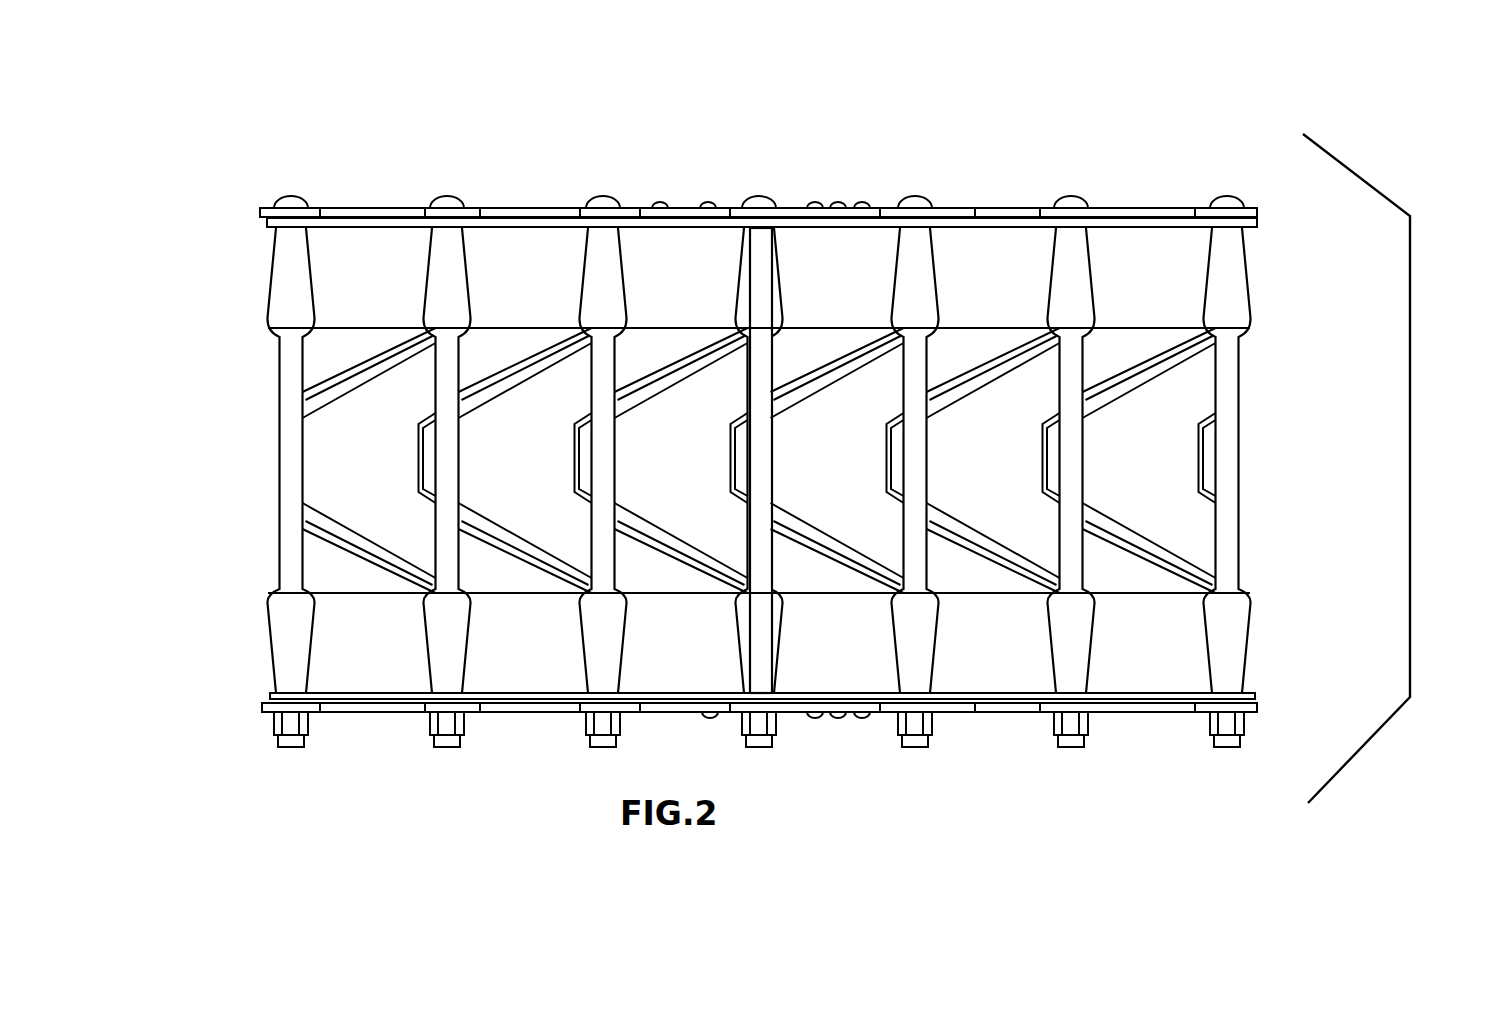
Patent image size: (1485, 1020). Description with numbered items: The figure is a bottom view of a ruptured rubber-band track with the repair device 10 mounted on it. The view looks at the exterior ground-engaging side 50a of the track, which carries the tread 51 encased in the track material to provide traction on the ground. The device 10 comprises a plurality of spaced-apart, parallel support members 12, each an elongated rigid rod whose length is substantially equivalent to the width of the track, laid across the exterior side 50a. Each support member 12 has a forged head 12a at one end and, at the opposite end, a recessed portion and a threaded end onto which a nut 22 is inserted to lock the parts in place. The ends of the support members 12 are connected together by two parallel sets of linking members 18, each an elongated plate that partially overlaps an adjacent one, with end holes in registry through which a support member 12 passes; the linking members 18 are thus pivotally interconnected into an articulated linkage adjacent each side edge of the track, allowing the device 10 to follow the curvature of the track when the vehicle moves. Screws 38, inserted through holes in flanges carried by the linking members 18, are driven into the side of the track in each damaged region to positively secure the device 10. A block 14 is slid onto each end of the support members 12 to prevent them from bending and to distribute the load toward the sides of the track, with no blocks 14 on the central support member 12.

The device 10 is at (1414, 283).
The support member 12 is at (1225, 520).
The forged head 12a is at (448, 208).
The block 14 is at (292, 625).
The linking member 18 is at (1150, 218).
The nut 22 is at (448, 725).
The screw 38 is at (864, 208).
The exterior ground-engaging side 50a is at (1178, 405).
The tread 51 is at (681, 370).